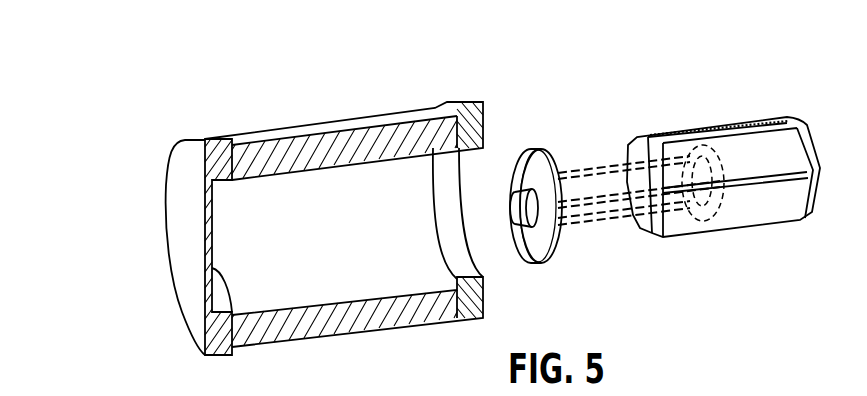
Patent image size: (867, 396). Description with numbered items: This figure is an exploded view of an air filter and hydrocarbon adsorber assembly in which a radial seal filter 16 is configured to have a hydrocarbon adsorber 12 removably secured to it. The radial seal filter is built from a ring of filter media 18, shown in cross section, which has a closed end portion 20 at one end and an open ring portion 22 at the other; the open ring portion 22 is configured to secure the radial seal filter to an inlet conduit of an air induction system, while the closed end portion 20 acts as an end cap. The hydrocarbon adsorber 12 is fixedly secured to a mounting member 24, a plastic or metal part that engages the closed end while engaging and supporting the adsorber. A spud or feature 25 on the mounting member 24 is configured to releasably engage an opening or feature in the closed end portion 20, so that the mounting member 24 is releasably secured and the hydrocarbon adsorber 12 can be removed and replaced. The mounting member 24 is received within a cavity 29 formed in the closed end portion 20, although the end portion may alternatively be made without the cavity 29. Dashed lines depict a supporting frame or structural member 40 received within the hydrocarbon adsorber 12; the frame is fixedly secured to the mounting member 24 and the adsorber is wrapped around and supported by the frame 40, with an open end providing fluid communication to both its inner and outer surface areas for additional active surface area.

The hydrocarbon adsorber 12 is at (735, 157).
The radial seal filter 16 is at (624, 104).
The ring of filter media 18 is at (367, 145).
The closed end portion 20 is at (219, 148).
The open ring portion 22 is at (468, 118).
The mounting member 24 is at (523, 150).
The spud 25 is at (523, 219).
The cavity 29 is at (213, 308).
The supporting frame 40 is at (603, 165).